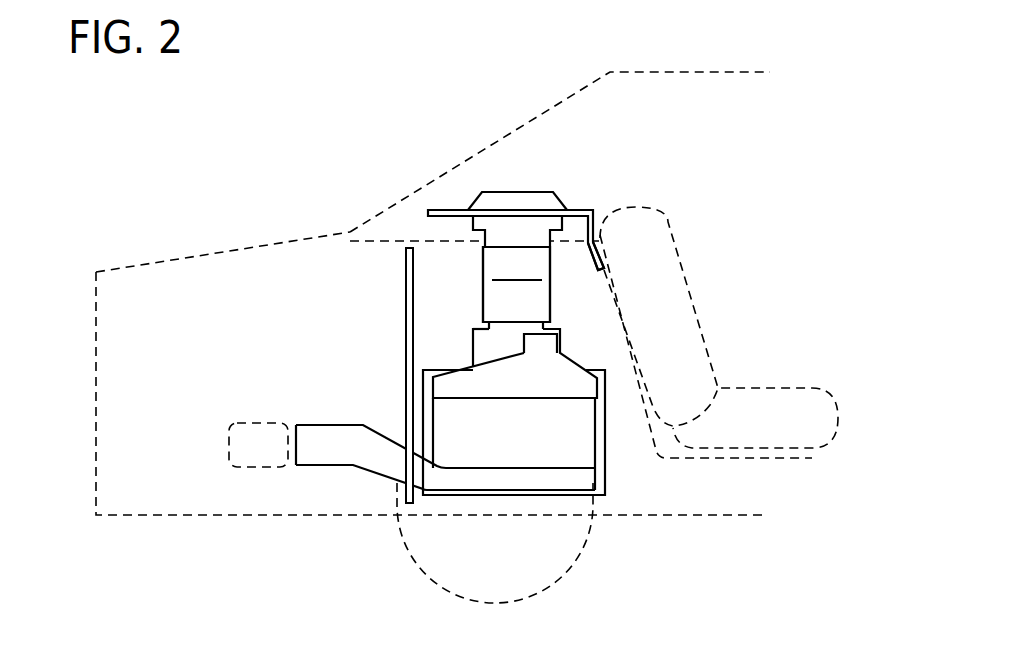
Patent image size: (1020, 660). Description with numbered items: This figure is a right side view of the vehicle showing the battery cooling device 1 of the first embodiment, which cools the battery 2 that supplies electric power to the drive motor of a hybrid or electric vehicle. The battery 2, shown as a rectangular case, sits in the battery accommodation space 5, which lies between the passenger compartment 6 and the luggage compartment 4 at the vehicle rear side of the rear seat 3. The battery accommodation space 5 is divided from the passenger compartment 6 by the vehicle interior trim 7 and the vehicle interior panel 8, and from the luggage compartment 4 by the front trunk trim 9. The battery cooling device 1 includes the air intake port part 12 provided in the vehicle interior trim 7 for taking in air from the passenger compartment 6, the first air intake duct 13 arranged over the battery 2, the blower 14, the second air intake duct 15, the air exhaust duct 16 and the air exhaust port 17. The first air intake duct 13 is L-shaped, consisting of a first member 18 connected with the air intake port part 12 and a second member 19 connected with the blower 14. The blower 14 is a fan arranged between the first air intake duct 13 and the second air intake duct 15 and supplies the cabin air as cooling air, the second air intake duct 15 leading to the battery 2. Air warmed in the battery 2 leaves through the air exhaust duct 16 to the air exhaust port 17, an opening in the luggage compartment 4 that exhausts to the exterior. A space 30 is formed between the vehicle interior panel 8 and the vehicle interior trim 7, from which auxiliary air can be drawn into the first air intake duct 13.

The battery cooling device 1 is at (562, 289).
The battery 2 is at (605, 482).
The rear seat 3 is at (812, 383).
The luggage compartment 4 is at (220, 309).
The battery accommodation space 5 is at (437, 291).
The passenger compartment 6 is at (735, 141).
The vehicle interior trim 7 is at (447, 210).
The vehicle interior panel 8 is at (653, 445).
The front trunk trim 9 is at (406, 267).
The air intake port part 12 is at (503, 192).
The first air intake duct 13 is at (455, 330).
The blower 14 is at (560, 347).
The second air intake duct 15 is at (597, 387).
The air exhaust duct 16 is at (325, 425).
The air exhaust port 17 is at (263, 423).
The first member 18 is at (473, 230).
The second member 19 is at (552, 317).
The space 30 is at (577, 230).